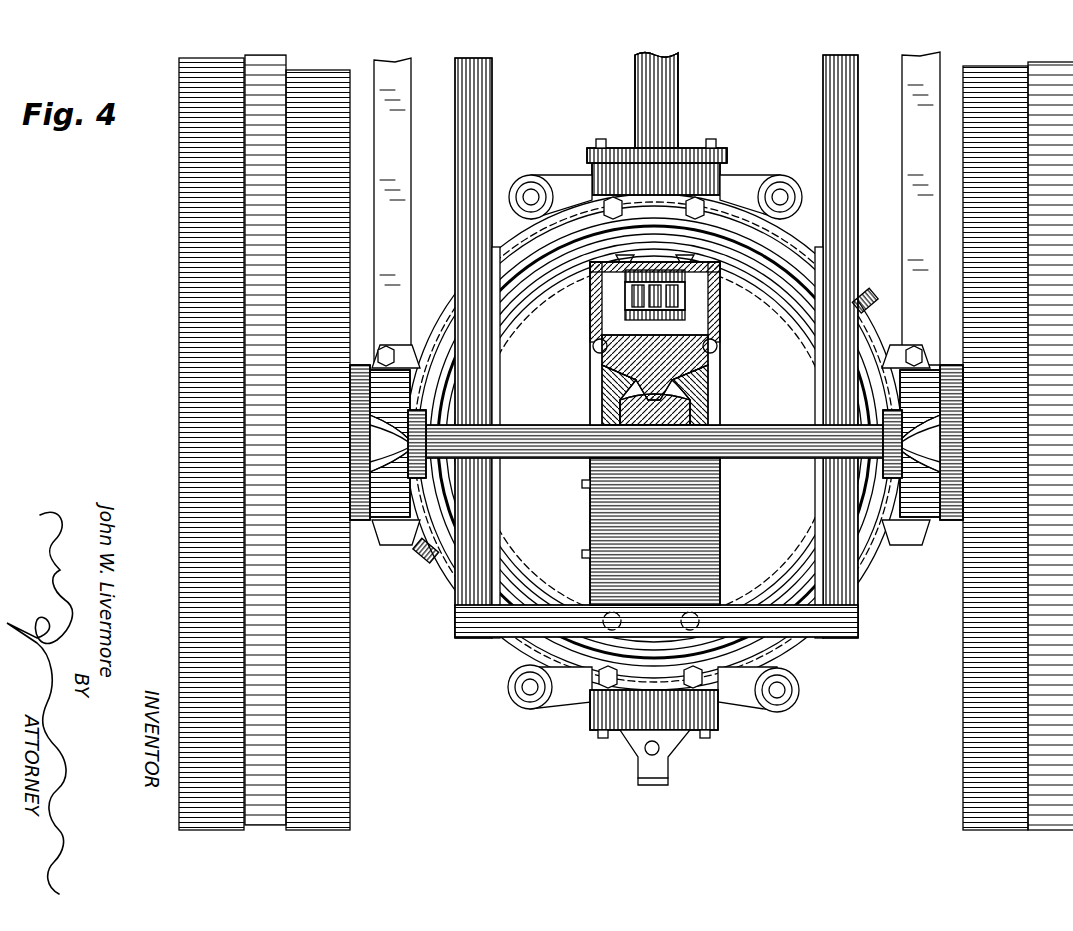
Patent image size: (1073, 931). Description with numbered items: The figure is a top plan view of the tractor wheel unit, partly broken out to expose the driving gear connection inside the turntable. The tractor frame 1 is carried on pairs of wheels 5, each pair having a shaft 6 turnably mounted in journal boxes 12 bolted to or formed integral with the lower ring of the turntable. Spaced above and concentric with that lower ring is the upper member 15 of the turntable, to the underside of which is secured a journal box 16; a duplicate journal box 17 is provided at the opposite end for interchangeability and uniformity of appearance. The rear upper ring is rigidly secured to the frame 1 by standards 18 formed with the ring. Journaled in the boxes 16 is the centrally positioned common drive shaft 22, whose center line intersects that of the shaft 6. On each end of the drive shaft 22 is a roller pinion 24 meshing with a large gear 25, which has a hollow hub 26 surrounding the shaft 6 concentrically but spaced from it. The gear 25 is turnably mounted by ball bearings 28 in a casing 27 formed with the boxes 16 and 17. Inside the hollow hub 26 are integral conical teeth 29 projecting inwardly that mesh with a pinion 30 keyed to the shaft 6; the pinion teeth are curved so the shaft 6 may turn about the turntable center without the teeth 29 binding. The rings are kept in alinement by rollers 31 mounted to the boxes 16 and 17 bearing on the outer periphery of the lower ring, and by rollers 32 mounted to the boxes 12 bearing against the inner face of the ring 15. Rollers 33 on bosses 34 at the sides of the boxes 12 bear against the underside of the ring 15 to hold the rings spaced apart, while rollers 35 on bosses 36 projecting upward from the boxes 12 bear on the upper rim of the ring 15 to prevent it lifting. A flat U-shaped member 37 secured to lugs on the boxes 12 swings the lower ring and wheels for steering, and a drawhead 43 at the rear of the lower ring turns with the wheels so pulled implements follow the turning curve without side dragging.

The frame 1 is at (485, 97).
The wheels 5 is at (322, 750).
The shaft 6 is at (540, 455).
The journal boxes 12 is at (913, 492).
The upper member of the turntable 15 is at (530, 286).
The journal box 16 is at (700, 186).
The journal box 17 is at (598, 735).
The standards 18 is at (452, 292).
The common drive shaft 22 is at (670, 80).
The roller pinion 24 is at (626, 295).
The large gear 25 is at (698, 298).
The hollow hub 26 is at (700, 358).
The casing 27 is at (588, 558).
The ball bearings 28 is at (593, 347).
The conical teeth 29 is at (600, 390).
The pinion 30 is at (700, 408).
The rollers 31 is at (522, 178).
The rollers 32 is at (815, 470).
The rollers 33 is at (447, 578).
The bosses 34 is at (420, 546).
The rollers 35 is at (886, 548).
The bosses 36 is at (950, 432).
The flat U-shaped member 37 is at (912, 102).
The drawhead 43 is at (662, 750).